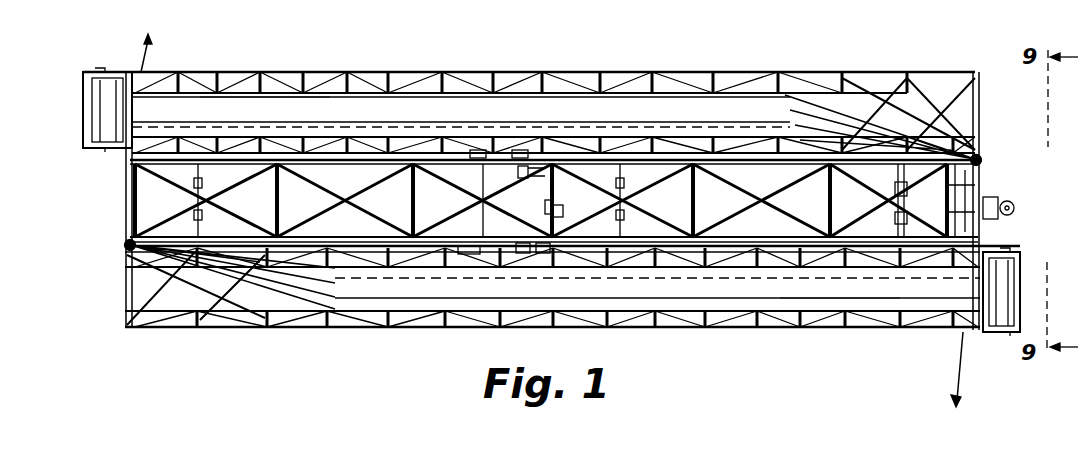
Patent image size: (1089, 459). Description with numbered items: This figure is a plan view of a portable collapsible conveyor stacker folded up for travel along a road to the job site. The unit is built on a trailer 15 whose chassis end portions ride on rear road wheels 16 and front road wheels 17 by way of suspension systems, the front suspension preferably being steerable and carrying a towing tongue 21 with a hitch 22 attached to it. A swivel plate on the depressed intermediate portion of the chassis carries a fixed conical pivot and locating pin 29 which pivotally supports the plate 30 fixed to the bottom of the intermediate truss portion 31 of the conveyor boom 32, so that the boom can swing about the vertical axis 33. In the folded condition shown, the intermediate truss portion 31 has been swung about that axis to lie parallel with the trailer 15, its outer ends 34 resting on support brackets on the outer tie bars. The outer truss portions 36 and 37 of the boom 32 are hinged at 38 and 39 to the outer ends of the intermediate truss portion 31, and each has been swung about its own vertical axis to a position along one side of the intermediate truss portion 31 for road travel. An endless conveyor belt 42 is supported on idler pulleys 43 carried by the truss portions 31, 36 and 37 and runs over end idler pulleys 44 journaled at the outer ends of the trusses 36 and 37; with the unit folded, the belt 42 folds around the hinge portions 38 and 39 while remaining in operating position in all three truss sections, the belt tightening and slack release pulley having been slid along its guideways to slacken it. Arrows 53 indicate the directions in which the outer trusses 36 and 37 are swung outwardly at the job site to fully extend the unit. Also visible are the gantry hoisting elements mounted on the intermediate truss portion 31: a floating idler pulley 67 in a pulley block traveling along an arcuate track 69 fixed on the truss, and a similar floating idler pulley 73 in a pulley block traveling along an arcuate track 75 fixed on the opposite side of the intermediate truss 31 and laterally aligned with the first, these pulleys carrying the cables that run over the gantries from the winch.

The trailer 15 is at (465, 252).
The rear road wheels 16 is at (303, 138).
The front road wheels 17 is at (792, 138).
The towing tongue 21 is at (923, 222).
The hitch 22 is at (1009, 217).
The conical pivot and locating pin 29 is at (546, 208).
The plate 30 is at (519, 172).
The intermediate truss portion 31 is at (452, 236).
The conveyor boom 32 is at (372, 68).
The vertical axis 33 is at (556, 210).
The outer ends 34 is at (125, 180).
The outer truss portion 36 is at (430, 334).
The outer truss portion 37 is at (640, 66).
The hinge 38 is at (126, 245).
The hinge 39 is at (981, 159).
The endless conveyor belt 42 is at (520, 108).
The idler pulleys 43 is at (340, 90).
The end idler pulleys 44 is at (92, 141).
The arrows 53 is at (143, 56).
The floating idler pulley 67 is at (523, 250).
The arcuate track 69 is at (543, 250).
The floating idler pulley 73 is at (522, 150).
The arcuate track 75 is at (478, 150).